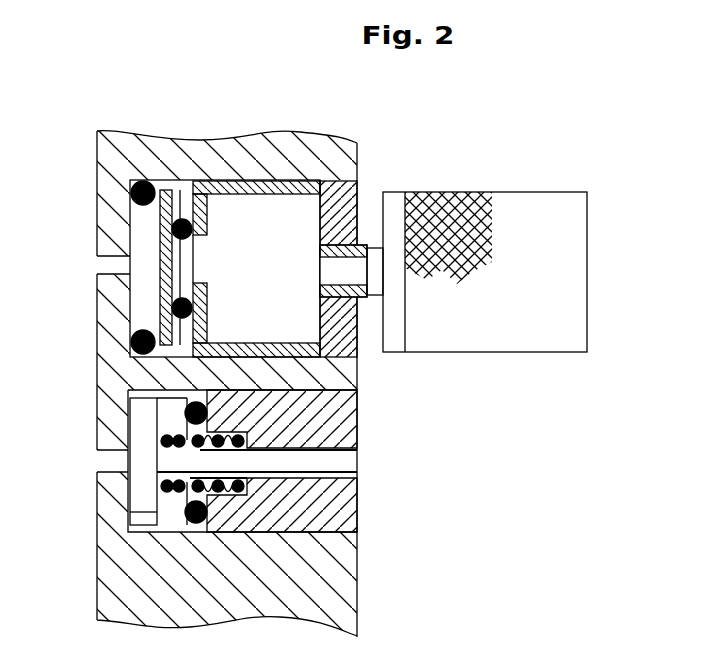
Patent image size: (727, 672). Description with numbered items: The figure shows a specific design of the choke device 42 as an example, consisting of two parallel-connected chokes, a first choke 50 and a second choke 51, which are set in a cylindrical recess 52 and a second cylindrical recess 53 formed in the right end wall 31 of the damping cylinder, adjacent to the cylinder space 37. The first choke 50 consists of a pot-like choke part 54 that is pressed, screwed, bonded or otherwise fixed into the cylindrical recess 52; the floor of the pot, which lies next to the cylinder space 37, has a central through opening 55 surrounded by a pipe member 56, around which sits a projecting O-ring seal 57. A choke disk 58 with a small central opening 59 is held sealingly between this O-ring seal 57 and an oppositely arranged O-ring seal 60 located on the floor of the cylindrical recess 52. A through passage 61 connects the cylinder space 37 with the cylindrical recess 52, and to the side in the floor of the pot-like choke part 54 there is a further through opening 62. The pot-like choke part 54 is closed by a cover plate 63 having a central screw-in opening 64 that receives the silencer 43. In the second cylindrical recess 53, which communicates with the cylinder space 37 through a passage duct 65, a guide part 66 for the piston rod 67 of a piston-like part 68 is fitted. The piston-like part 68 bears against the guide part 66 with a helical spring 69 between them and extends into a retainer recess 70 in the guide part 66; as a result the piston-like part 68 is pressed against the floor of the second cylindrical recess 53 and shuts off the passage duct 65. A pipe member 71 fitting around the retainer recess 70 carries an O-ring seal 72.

The right end wall 31 is at (345, 573).
The cylinder space 37 is at (48, 358).
The choke device 42 is at (248, 120).
The silencer 43 is at (476, 205).
The first choke 50 is at (372, 193).
The second choke 51 is at (381, 490).
The cylindrical recess 52 is at (130, 215).
The second cylindrical recess 53 is at (181, 522).
The pot-like choke part 54 is at (289, 181).
The central through opening 55 is at (195, 268).
The pipe member 56 is at (178, 238).
The O-ring seal 57 is at (190, 309).
The choke disk 58 is at (168, 190).
The small central opening 59 is at (170, 285).
The O-ring seal 60 is at (146, 183).
The through passage 61 is at (100, 268).
The through opening 62 is at (205, 210).
The cover plate 63 is at (355, 345).
The central screw-in opening 64 is at (318, 284).
The passage duct 65 is at (100, 462).
The guide part 66 is at (347, 522).
The piston rod 67 is at (347, 457).
The piston-like part 68 is at (130, 493).
The helical spring 69 is at (172, 522).
The retainer recess 70 is at (212, 500).
The pipe member 71 is at (182, 425).
The O-ring seal 72 is at (191, 522).